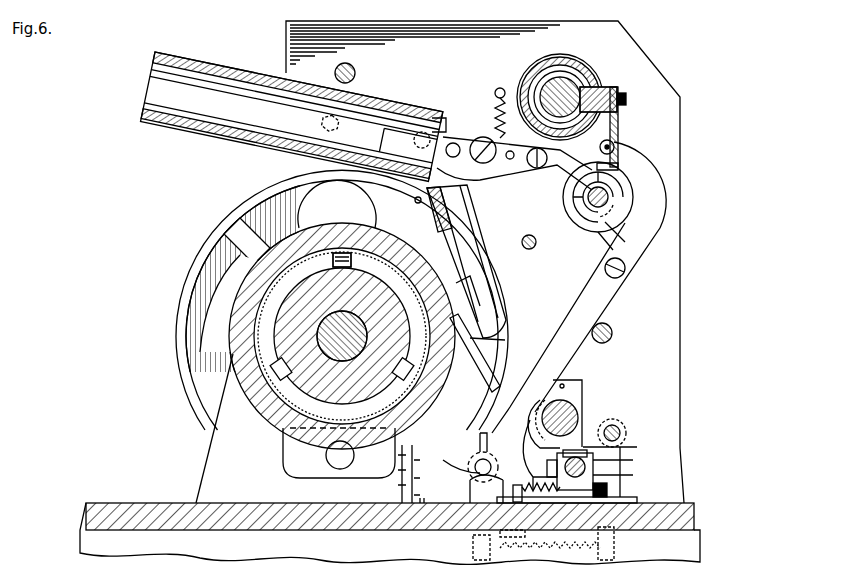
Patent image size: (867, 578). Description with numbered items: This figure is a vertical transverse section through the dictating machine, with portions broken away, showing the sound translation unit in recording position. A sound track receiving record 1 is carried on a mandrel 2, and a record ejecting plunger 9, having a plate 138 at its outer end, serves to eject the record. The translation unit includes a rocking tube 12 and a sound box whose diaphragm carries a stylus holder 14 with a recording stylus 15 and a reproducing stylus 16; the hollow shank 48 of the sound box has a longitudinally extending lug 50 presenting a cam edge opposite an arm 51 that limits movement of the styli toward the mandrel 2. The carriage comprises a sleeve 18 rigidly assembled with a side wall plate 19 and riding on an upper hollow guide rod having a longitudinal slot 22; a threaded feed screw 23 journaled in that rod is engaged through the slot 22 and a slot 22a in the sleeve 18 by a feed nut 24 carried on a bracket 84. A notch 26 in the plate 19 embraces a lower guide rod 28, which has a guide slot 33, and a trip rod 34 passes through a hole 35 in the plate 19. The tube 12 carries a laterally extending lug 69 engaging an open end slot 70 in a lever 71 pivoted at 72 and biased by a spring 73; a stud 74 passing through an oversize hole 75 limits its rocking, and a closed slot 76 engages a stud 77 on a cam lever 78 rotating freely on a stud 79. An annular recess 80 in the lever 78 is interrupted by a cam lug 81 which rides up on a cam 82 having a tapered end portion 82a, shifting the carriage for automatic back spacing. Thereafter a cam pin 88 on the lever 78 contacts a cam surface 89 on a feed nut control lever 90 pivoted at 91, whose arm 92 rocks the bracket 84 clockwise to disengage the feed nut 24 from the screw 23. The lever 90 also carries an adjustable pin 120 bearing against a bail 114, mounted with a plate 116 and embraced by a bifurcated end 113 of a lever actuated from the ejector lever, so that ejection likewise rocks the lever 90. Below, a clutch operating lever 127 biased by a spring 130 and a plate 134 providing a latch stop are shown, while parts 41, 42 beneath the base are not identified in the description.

The sound track receiving record 1 is at (235, 338).
The mandrel 2 is at (260, 350).
The record ejecting plunger 9 is at (338, 460).
The rocking tube 12 is at (238, 72).
The stylus holder 14 is at (466, 343).
The recording stylus 15 is at (466, 302).
The reproducing stylus 16 is at (460, 345).
The sleeve 18 is at (575, 82).
The side wall plate 19 is at (680, 285).
The longitudinal slot 22 is at (613, 185).
The slot in sleeve 22a is at (600, 86).
The threaded feed screw 23 is at (561, 78).
The feed nut 24 is at (628, 97).
The notch 26 is at (583, 385).
The lower guide rod 28 is at (572, 420).
The guide slot 33 is at (566, 411).
The trip rod 34 is at (618, 430).
The hole 35 is at (620, 440).
The member 41 is at (540, 505).
The member 42 is at (560, 505).
The hollow shank 48 is at (492, 255).
The longitudinally extending lug 50 is at (432, 219).
The arm 51 is at (415, 200).
The laterally extending lug 69 is at (426, 128).
The open end slot 70 is at (412, 139).
The lever 71 is at (470, 135).
The pivot 72 is at (500, 88).
The spring 73 is at (515, 140).
The stud 74 is at (454, 142).
The hole 75 is at (470, 160).
The closed slot 76 is at (508, 160).
The stud 77 is at (537, 169).
The cam lever 78 is at (700, 231).
The stud 79 is at (598, 178).
The annular recess 80 is at (620, 196).
The cam lug 81 is at (585, 215).
The cam 82 is at (620, 230).
The tapered end portion 82a is at (590, 225).
The bracket 84 is at (620, 118).
The cam pin 88 is at (625, 225).
The cam surface 89 is at (618, 205).
The feed nut control lever 90 is at (598, 300).
The pivot 91 is at (605, 270).
The arm 92 is at (615, 145).
The bifurcated end 113 is at (611, 470).
The bail 114 is at (606, 472).
The plate 116 is at (565, 390).
The adjustable pin 120 is at (537, 470).
The clutch operating lever 127 is at (473, 492).
The spring 130 is at (614, 568).
The plate 134 is at (450, 458).
The plate 138 is at (286, 466).